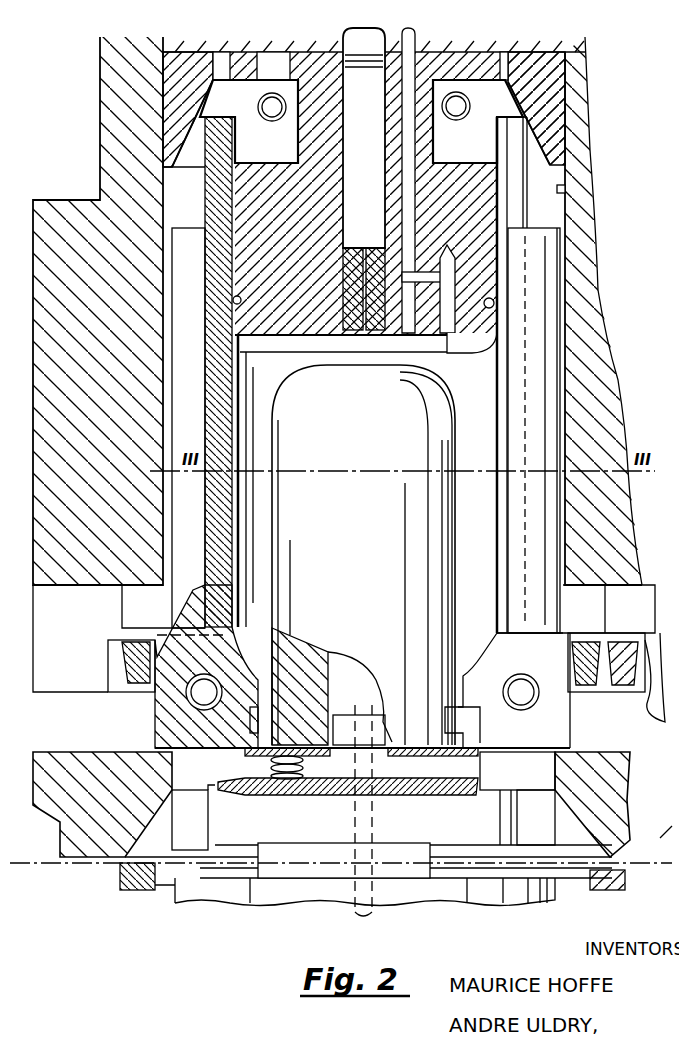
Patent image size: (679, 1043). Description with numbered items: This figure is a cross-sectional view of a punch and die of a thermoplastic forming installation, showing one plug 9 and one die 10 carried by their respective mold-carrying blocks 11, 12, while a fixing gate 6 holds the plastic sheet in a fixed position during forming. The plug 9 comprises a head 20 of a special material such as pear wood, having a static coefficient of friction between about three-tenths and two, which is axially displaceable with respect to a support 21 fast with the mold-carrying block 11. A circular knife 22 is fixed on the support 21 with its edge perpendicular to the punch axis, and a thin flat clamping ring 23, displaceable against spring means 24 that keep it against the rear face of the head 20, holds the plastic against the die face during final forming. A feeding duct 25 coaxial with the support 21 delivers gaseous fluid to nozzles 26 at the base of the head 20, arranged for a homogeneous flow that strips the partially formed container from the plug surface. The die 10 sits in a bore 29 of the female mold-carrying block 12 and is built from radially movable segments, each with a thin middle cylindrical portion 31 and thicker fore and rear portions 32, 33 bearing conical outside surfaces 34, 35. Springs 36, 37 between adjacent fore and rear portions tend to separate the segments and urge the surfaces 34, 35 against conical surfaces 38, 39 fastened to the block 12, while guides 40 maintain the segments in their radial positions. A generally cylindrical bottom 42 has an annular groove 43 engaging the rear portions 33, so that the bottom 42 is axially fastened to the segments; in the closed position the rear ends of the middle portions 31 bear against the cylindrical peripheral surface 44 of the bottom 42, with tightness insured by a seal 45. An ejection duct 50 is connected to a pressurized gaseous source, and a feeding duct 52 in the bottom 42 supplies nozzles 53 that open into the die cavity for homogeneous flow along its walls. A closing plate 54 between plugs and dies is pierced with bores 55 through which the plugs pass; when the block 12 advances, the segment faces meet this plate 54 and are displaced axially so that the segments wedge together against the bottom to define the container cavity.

The fixing gate 6 is at (130, 892).
The plug 9 is at (452, 548).
The die 10 is at (400, 484).
The mold-carrying block 11 is at (215, 908).
The female mold-carrying block 12 is at (70, 198).
The head 20 is at (363, 555).
The support 21 is at (344, 860).
The circular knife 22 is at (484, 776).
The clamping ring 23 is at (402, 790).
The spring means 24 is at (272, 796).
The feeding duct 25 is at (372, 912).
The nozzles 26 is at (312, 660).
The bore 29 is at (573, 192).
The middle cylindrical portion 31 is at (216, 342).
The fore portion 32 is at (240, 657).
The rear portion 33 is at (361, 121).
The conical outside surface 34 is at (188, 597).
The conical outside surface 35 is at (224, 56).
The spring 36 is at (190, 694).
The spring 37 is at (266, 114).
The conical surface 38 is at (134, 676).
The conical surface 39 is at (176, 153).
The guides 40 is at (612, 242).
The bottom 42 is at (313, 218).
The annular groove 43 is at (304, 62).
The cylindrical peripheral surface 44 is at (213, 206).
The seal 45 is at (225, 303).
The duct 50 is at (366, 250).
The feeding duct 52 is at (415, 58).
The nozzles 53 is at (450, 348).
The closing plate 54 is at (78, 766).
The bores 55 is at (361, 817).